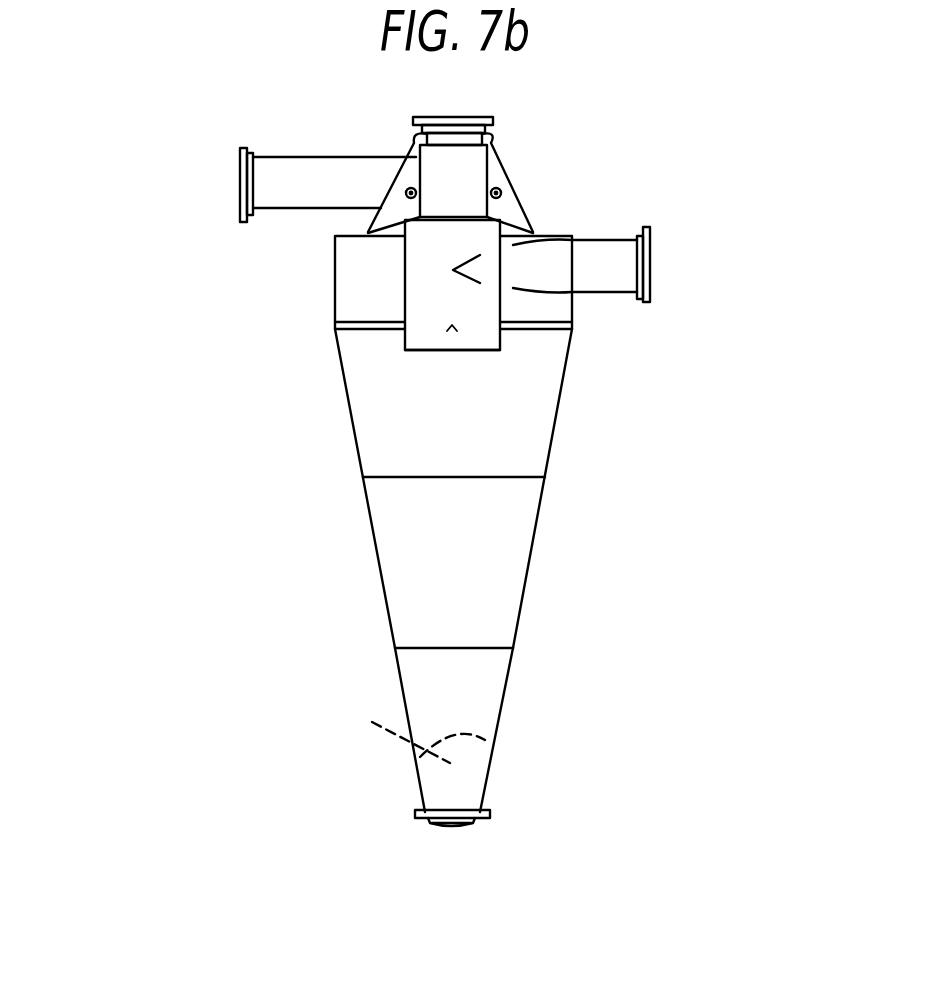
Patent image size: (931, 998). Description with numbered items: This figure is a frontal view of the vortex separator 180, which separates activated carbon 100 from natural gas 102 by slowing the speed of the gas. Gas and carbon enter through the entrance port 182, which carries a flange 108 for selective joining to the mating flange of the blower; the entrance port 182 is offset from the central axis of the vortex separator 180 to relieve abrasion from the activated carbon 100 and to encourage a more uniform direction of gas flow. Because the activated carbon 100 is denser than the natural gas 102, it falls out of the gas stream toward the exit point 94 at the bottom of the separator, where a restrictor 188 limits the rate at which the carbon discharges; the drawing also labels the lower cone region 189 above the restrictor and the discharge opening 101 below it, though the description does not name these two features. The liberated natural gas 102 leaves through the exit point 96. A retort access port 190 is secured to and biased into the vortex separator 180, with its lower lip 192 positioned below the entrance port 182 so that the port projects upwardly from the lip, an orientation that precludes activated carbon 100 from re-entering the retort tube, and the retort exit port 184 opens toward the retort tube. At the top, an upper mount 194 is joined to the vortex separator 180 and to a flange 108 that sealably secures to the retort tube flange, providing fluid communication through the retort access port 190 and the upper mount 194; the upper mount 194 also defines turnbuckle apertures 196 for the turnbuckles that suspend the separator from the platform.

The exit point 94 is at (482, 818).
The exit point 96 is at (238, 192).
The activated carbon 100 is at (402, 727).
The underflow outlet 101 is at (443, 823).
The natural gas 102 is at (240, 175).
The flange 108 is at (493, 117).
The vortex separator 180 is at (482, 442).
The entrance port 182 is at (650, 255).
The retort exit port 184 is at (443, 117).
The restrictor 188 is at (468, 808).
The cone apex 189 is at (437, 798).
The retort access port 190 is at (418, 298).
The lower lip 192 is at (468, 352).
The upper mount 194 is at (477, 195).
The turnbuckle apertures 196 is at (406, 189).